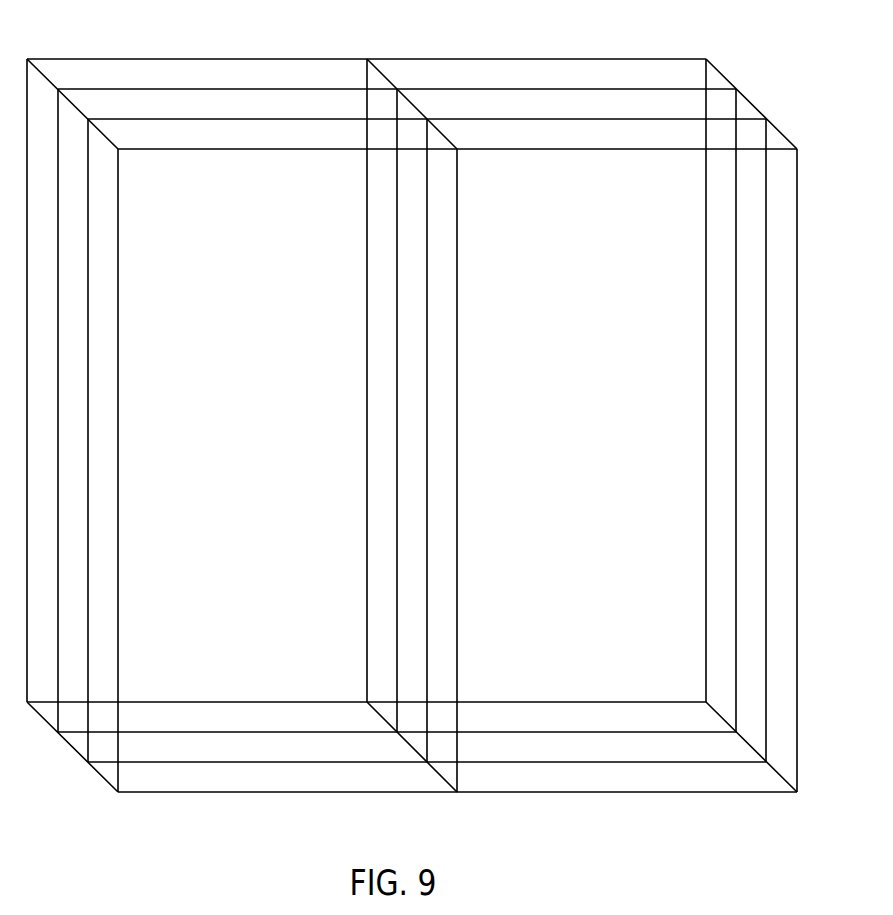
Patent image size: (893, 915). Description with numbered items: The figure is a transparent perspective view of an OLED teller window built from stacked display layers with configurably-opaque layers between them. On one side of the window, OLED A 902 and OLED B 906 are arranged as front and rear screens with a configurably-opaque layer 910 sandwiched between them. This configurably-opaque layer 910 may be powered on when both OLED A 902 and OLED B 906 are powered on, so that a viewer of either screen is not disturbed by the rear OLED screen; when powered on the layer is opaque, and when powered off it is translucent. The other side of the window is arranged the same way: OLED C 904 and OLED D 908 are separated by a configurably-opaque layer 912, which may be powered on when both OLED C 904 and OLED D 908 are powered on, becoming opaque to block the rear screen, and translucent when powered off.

The OLED A 902 is at (202, 136).
The OLED C 904 is at (543, 136).
The OLED B 906 is at (267, 73).
The OLED D 908 is at (606, 73).
The configurably-opaque layer 910 is at (103, 98).
The configurably-opaque layer 912 is at (442, 100).